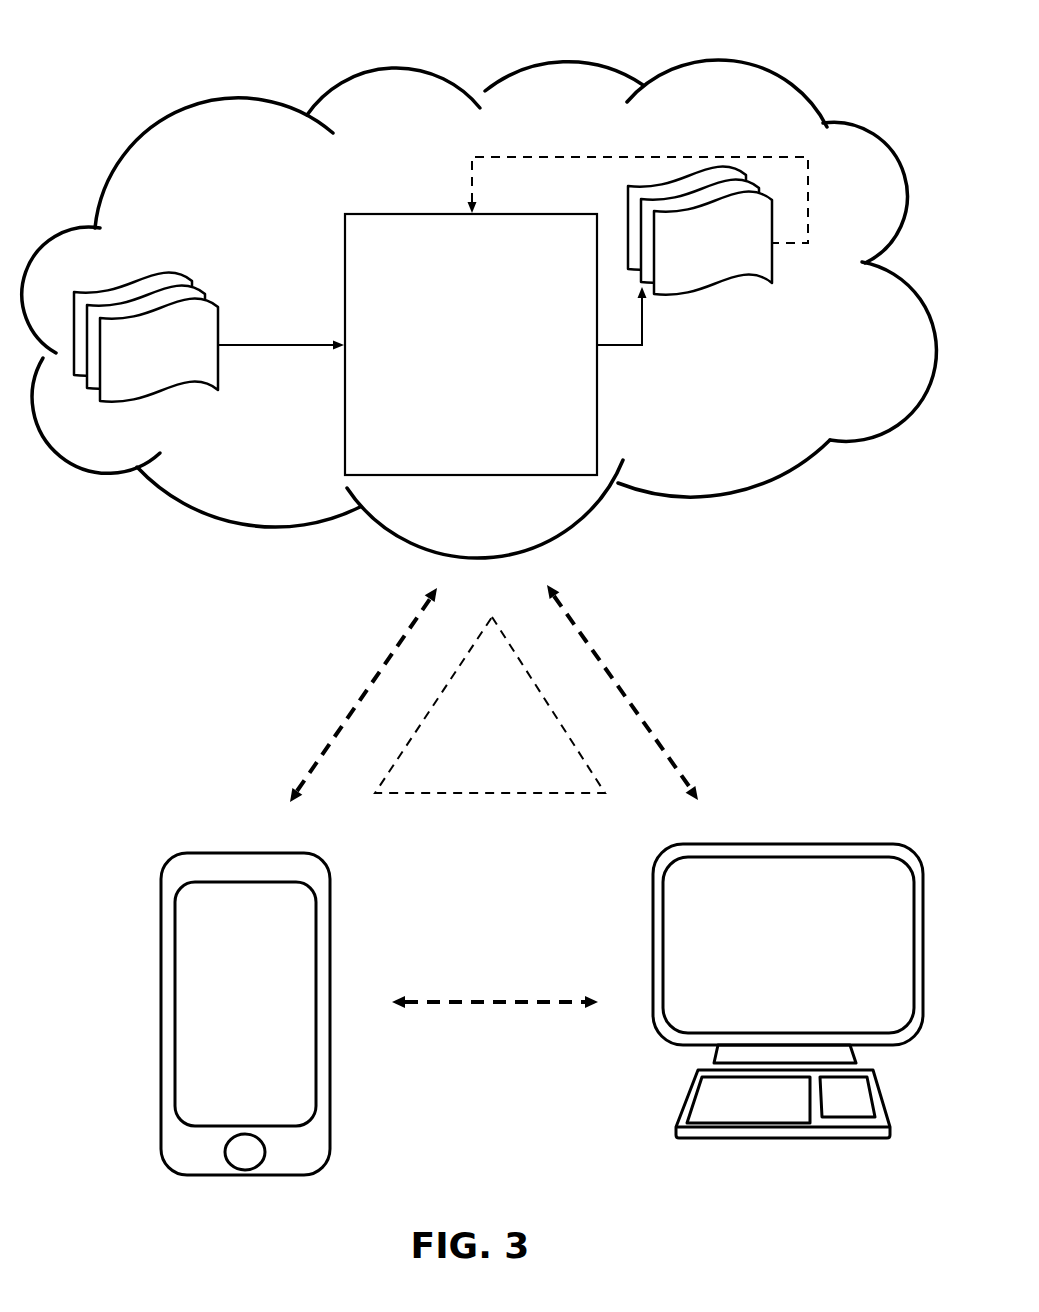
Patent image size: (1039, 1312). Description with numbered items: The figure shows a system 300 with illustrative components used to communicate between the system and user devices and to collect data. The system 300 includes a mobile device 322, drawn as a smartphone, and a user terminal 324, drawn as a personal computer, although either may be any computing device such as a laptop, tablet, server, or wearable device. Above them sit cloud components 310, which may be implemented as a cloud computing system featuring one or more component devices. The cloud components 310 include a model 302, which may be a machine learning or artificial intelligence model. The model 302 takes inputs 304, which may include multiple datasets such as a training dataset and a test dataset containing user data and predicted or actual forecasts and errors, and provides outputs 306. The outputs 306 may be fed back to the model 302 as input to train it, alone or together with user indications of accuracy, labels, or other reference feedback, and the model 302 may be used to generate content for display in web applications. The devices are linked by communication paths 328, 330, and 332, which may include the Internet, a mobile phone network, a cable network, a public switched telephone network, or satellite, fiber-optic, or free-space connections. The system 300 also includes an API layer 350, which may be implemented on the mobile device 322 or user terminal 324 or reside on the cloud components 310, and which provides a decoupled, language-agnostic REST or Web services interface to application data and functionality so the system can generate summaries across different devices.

The system 300 is at (479, 293).
The model 302 is at (432, 344).
The inputs 304 is at (165, 272).
The outputs 306 is at (753, 275).
The cloud components 310 is at (777, 108).
The mobile device 322 is at (233, 819).
The user terminal 324 is at (783, 824).
The communication path 328 is at (314, 672).
The communication path 330 is at (706, 642).
The communication path 332 is at (491, 963).
The API layer 350 is at (490, 705).